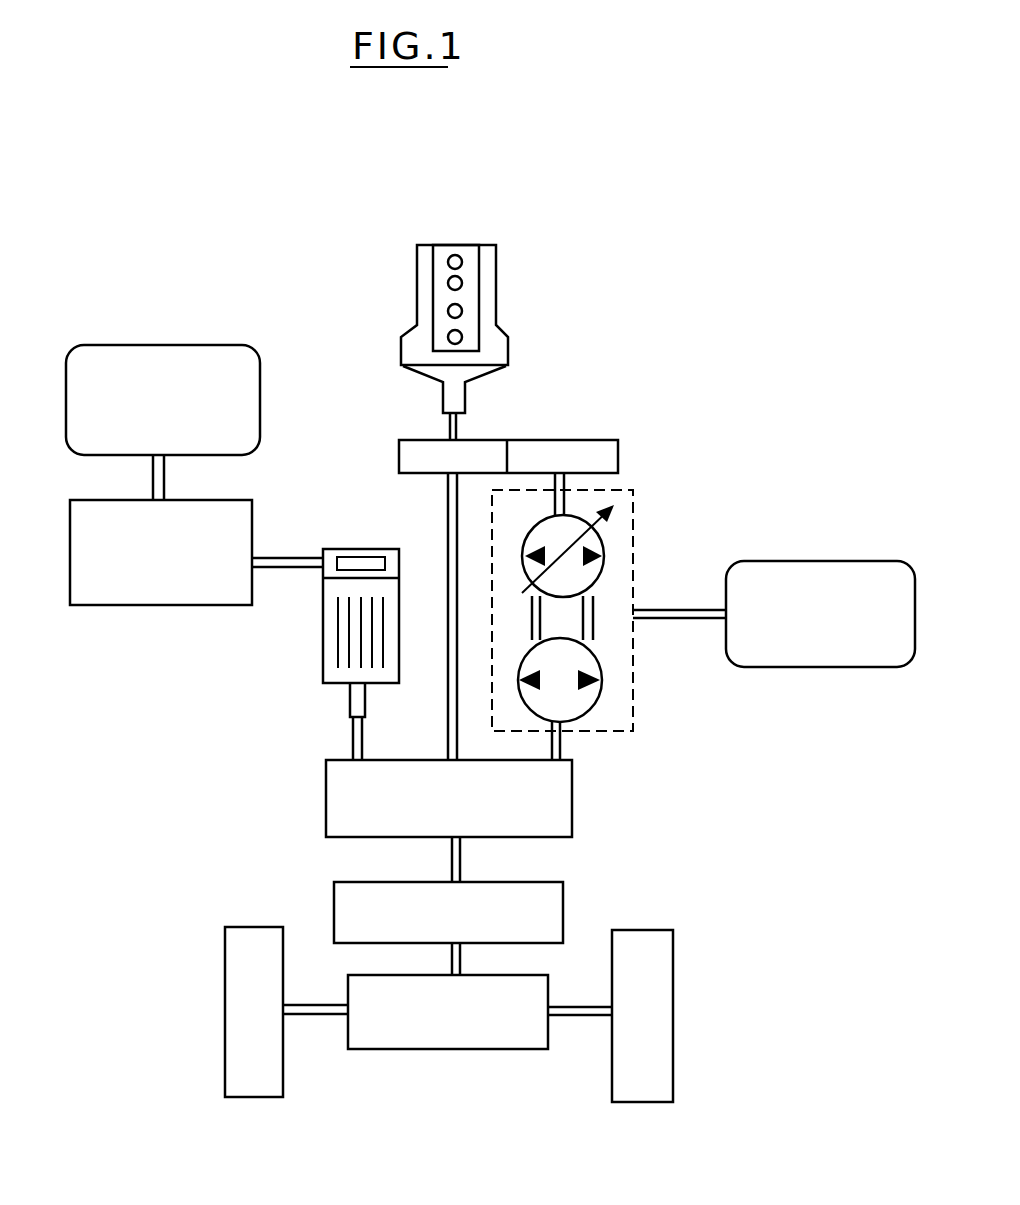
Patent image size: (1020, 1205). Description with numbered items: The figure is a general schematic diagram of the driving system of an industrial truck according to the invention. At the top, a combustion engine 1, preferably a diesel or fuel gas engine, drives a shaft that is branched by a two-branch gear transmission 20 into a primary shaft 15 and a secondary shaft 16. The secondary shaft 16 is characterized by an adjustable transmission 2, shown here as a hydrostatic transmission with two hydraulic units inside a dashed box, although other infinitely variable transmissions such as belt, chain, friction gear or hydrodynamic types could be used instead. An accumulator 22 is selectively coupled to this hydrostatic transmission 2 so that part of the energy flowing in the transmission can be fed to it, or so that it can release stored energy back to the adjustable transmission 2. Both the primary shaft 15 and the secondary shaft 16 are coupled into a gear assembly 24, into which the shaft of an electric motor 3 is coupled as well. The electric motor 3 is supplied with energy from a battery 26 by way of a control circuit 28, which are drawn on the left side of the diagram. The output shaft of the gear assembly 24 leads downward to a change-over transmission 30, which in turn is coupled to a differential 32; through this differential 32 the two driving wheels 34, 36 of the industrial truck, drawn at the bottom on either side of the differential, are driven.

The combustion engine 1 is at (423, 298).
The adjustable transmission 2 is at (627, 524).
The electric motor 3 is at (327, 670).
The primary shaft 15 is at (448, 518).
The secondary shaft 16 is at (563, 747).
The two-branch gear transmission 20 is at (515, 435).
The accumulator 22 is at (810, 557).
The gear assembly 24 is at (560, 820).
The battery 26 is at (135, 365).
The control circuit 28 is at (92, 587).
The change-over transmission 30 is at (548, 897).
The differential 32 is at (453, 1027).
The driving wheel 34 is at (247, 1030).
The driving wheel 36 is at (652, 1043).